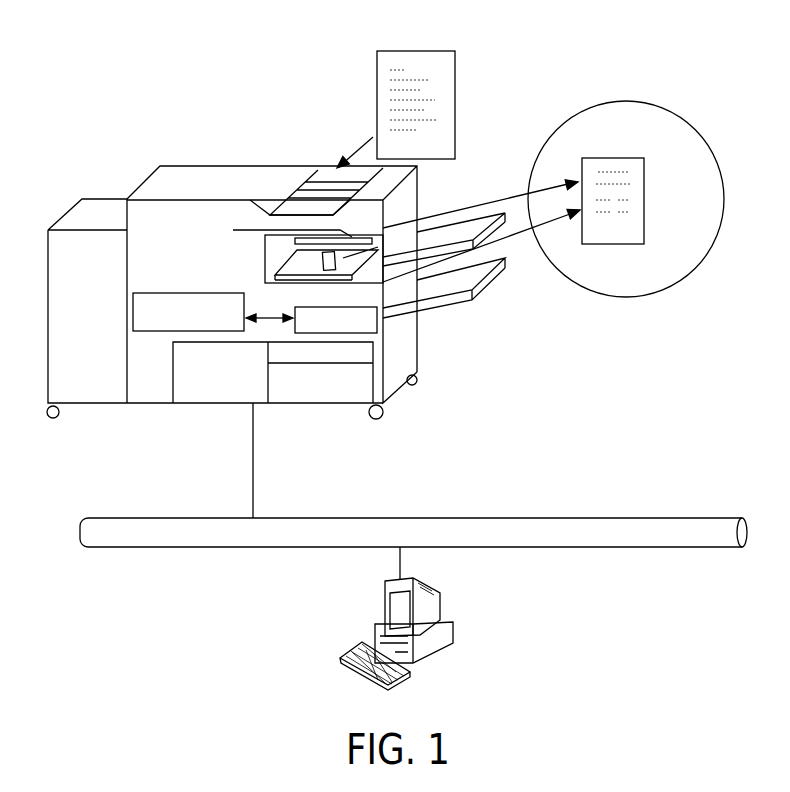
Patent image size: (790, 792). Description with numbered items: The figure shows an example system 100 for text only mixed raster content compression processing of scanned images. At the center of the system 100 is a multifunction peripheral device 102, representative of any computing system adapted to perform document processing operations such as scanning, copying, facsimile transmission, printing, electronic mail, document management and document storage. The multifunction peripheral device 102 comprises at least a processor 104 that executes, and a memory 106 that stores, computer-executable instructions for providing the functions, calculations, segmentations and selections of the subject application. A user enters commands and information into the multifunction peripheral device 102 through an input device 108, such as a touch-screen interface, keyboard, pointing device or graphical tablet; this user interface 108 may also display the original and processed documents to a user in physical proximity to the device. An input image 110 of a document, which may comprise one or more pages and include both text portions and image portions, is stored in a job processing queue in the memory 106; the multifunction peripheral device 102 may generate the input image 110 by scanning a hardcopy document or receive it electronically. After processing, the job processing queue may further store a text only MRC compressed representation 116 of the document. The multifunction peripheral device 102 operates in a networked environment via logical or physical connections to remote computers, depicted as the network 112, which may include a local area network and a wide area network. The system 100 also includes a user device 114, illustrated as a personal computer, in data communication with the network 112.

The system 100 is at (134, 149).
The multifunction peripheral device 102 is at (283, 166).
The processor 104 is at (205, 292).
The memory 106 is at (383, 322).
The input device 108 is at (290, 258).
The input image 110 is at (455, 100).
The network 112 is at (480, 517).
The user device 114 is at (442, 607).
The text only MRC compressed representation 116 is at (645, 198).